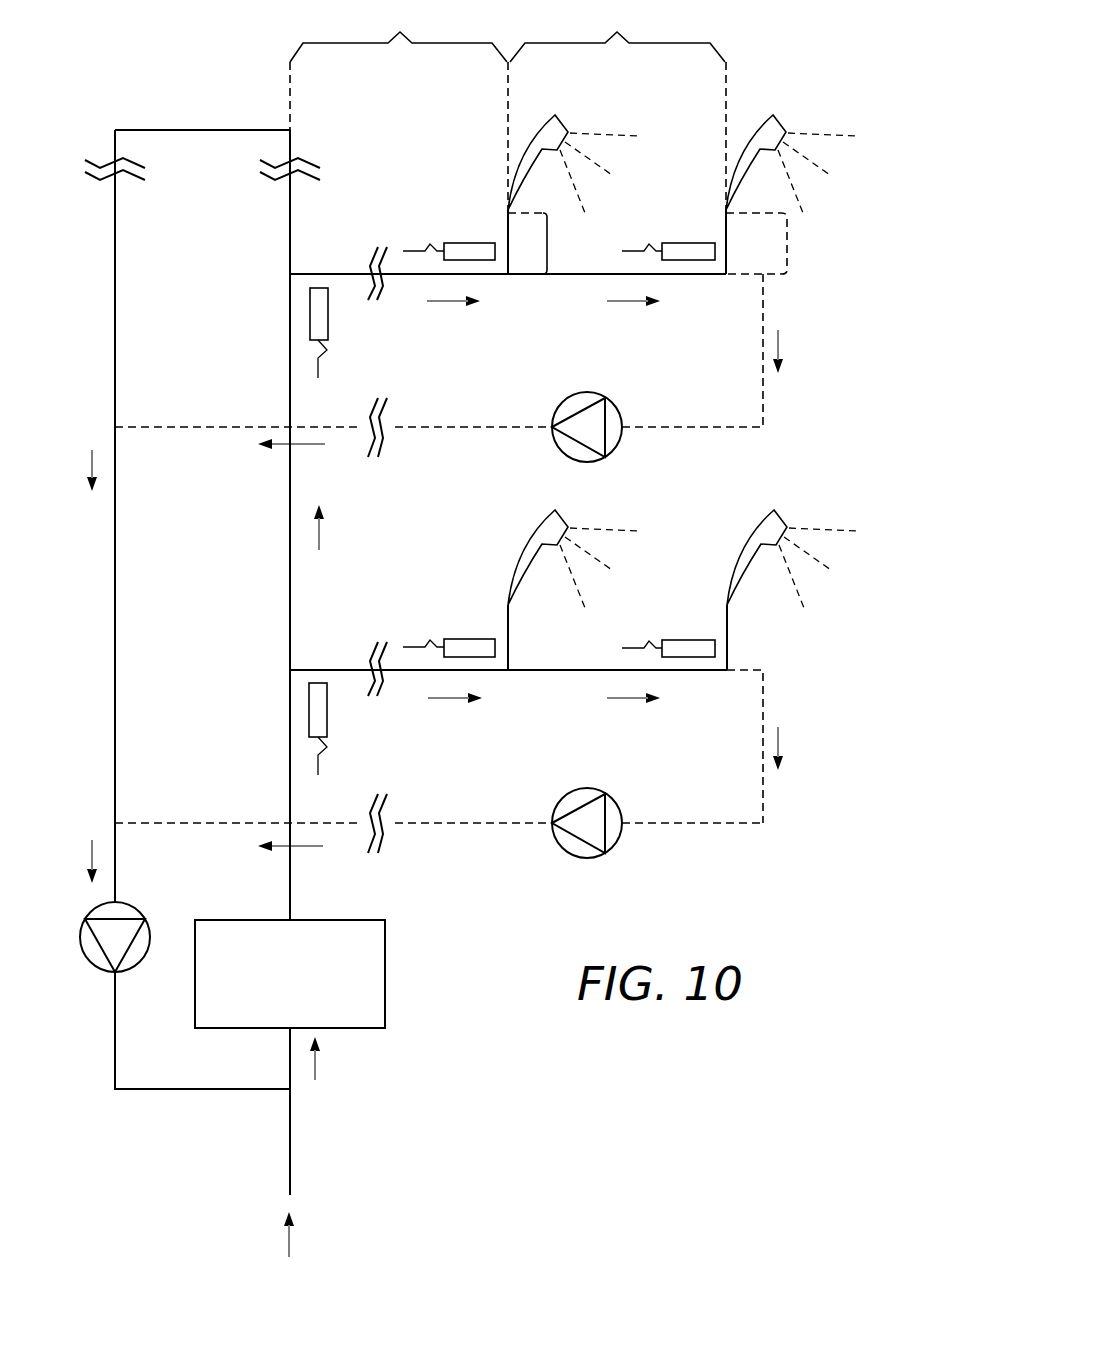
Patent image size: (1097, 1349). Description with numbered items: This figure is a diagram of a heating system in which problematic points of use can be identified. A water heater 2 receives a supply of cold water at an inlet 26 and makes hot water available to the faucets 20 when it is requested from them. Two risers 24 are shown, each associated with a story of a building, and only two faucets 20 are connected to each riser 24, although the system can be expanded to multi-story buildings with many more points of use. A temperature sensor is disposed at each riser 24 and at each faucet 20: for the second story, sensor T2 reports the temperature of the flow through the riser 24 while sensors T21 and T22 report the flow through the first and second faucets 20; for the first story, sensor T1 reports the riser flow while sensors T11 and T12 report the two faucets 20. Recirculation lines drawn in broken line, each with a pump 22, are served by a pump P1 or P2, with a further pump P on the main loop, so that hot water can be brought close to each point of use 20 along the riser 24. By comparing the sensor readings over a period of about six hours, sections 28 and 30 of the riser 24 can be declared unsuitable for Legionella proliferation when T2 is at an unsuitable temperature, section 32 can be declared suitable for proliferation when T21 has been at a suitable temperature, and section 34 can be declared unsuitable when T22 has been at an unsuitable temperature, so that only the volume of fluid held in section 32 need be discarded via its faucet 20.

The water heater 2 is at (385, 967).
The faucet 20 is at (543, 120).
The pump 22 is at (330, 674).
The riser 24 is at (305, 273).
The inlet 26 is at (290, 1142).
The section of the riser 28 is at (398, 31).
The section of the riser 30 is at (617, 105).
The section 32 is at (551, 214).
The section 34 is at (790, 214).
The temperature sensor T1 is at (327, 706).
The temperature sensor T2 is at (328, 310).
The temperature sensor T11 is at (472, 639).
The temperature sensor T12 is at (690, 640).
The temperature sensor T21 is at (472, 243).
The temperature sensor T22 is at (690, 243).
The pump P is at (83, 955).
The pump P1 is at (587, 808).
The pump P2 is at (587, 405).